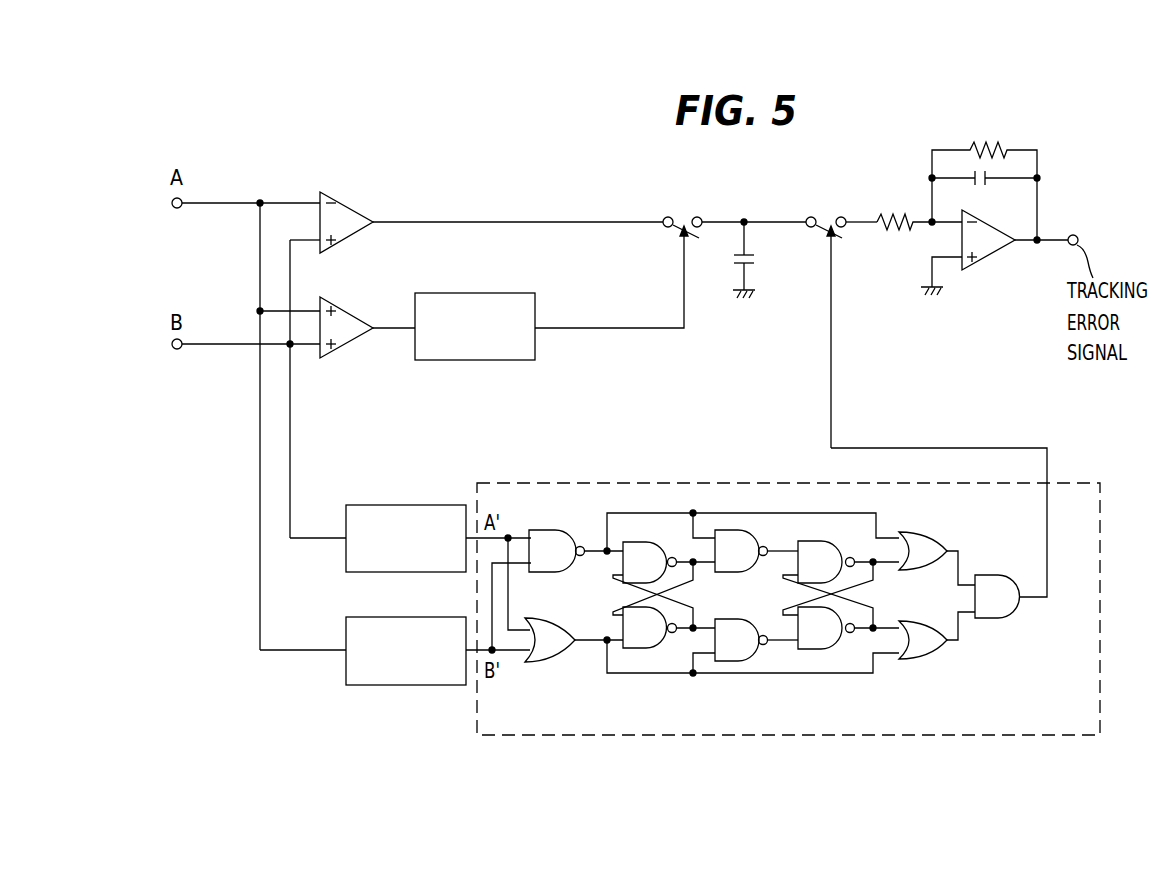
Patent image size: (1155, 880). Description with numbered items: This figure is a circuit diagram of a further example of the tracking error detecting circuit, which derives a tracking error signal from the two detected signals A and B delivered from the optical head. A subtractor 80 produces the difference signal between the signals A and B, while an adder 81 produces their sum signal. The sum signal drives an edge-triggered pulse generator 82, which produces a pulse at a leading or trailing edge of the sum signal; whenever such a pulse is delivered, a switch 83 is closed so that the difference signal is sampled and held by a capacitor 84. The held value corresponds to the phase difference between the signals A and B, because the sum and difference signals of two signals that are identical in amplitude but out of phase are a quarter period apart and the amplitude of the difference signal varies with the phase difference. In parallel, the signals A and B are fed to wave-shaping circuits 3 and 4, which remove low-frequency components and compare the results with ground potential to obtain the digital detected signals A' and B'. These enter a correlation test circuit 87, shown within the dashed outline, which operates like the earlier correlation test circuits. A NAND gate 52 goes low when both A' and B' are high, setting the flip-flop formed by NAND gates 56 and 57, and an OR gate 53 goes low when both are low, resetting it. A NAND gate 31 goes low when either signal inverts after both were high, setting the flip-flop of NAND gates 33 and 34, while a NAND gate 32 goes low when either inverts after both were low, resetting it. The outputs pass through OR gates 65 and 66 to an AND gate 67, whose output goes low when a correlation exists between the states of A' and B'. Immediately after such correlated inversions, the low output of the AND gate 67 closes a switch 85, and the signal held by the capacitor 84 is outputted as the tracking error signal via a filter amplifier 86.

The wave-shaping circuit 3 is at (395, 505).
The wave-shaping circuit 4 is at (405, 617).
The NAND gate 31 is at (748, 531).
The NAND gate 32 is at (733, 619).
The NAND gate 33 is at (832, 547).
The NAND gate 34 is at (828, 649).
The NAND gate 52 is at (542, 531).
The OR gate 53 is at (555, 627).
The NAND gate 56 is at (646, 546).
The NAND gate 57 is at (650, 648).
The OR gate 65 is at (933, 536).
The OR gate 66 is at (938, 652).
The AND gate 67 is at (1020, 605).
The subtractor 80 is at (352, 207).
The adder 81 is at (348, 308).
The edge-triggered pulse generator 82 is at (478, 360).
The switch 83 is at (684, 212).
The capacitor 84 is at (758, 265).
The switch 85 is at (828, 212).
The filter amplifier 86 is at (1003, 252).
The correlation test circuit 87 is at (752, 740).